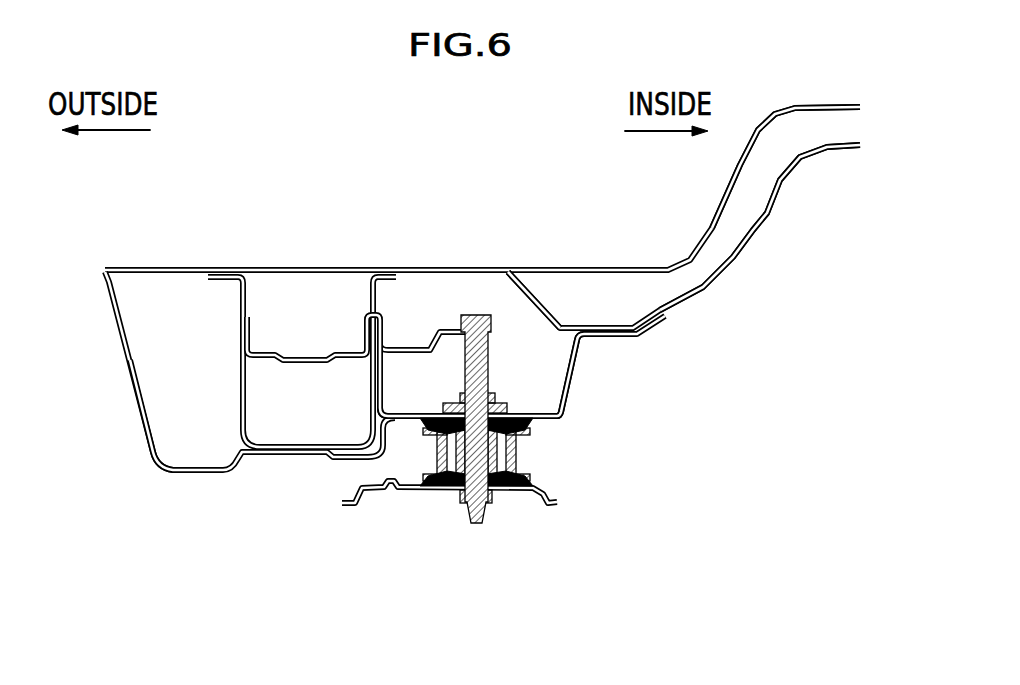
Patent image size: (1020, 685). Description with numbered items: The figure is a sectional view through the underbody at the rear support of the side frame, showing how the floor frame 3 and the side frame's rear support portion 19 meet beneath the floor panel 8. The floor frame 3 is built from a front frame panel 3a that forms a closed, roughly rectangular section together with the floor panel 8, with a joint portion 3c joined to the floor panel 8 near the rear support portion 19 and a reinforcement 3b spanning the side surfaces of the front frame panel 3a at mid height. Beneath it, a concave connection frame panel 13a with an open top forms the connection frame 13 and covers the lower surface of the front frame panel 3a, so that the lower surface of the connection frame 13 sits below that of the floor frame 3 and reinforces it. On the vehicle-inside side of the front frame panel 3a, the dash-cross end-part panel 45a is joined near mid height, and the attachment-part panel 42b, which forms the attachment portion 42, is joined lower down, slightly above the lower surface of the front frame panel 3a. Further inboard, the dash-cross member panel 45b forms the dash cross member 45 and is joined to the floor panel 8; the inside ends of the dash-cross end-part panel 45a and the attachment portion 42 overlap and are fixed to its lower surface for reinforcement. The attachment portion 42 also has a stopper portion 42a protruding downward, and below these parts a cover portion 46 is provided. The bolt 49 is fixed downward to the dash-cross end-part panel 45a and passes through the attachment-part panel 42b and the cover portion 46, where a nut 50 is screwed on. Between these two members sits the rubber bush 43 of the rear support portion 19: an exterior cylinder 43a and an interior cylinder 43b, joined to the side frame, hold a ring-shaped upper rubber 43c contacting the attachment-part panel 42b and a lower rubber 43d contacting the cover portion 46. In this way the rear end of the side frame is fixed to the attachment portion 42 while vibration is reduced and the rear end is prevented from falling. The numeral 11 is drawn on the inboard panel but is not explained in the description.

The floor frame 3 is at (308, 432).
The front frame panel 3a is at (240, 398).
The reinforcement 3b is at (265, 352).
The joint portion 3c is at (217, 274).
The floor panel 8 is at (318, 268).
The inner panel 11 is at (815, 105).
The connection frame 13 is at (191, 473).
The connection frame panel 13a is at (139, 400).
The rear support portion 19 is at (527, 512).
The attachment portion 42 is at (520, 419).
The stopper portion 42a is at (563, 385).
The attachment-part panel 42b is at (422, 413).
The rubber bush 43 is at (536, 462).
The exterior cylinder 43a is at (440, 449).
The interior cylinder 43b is at (443, 492).
The upper rubber 43c is at (522, 421).
The lower rubber 43d is at (553, 482).
The dash cross member 45 is at (660, 320).
The dash-cross end-part panel 45a is at (428, 340).
The dash-cross member panel 45b is at (690, 302).
The cover portion 46 is at (372, 491).
The bolt 49 is at (490, 348).
The nut 50 is at (490, 498).